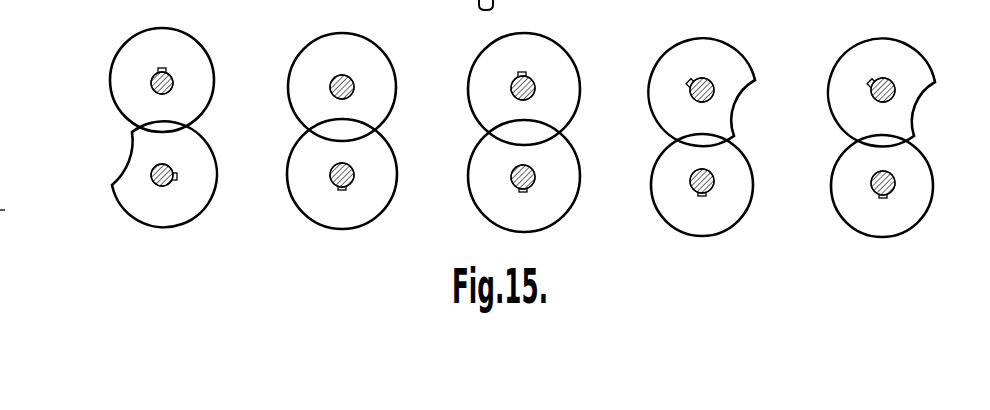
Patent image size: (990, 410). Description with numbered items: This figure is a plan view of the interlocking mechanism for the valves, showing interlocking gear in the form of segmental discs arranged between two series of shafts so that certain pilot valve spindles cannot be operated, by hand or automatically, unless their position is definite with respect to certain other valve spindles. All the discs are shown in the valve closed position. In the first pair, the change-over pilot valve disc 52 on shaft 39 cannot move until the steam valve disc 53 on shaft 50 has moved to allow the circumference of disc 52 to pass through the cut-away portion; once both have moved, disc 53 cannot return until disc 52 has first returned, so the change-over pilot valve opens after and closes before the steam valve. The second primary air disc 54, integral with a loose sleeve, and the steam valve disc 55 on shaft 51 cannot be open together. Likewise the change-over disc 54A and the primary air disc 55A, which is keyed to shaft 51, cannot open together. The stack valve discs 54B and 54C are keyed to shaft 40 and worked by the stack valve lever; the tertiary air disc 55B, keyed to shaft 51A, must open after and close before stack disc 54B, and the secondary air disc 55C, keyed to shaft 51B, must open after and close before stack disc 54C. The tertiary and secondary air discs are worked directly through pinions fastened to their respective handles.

The shaft 39 is at (151, 84).
The segmental disc 52 is at (208, 72).
The shaft 50 is at (176, 176).
The segmental disc 53 is at (160, 223).
The segmental disc 54 is at (374, 63).
The segmental disc 55 is at (384, 194).
The shaft 51 is at (350, 188).
The segmental disc 54A is at (543, 48).
The segmental disc 55A is at (566, 180).
The segmental disc 54B is at (730, 58).
The shaft 40 is at (716, 90).
The segmental disc 55B is at (748, 160).
The shaft 51A is at (710, 186).
The segmental disc 54C is at (906, 58).
The segmental disc 55C is at (930, 168).
The shaft 51B is at (892, 190).